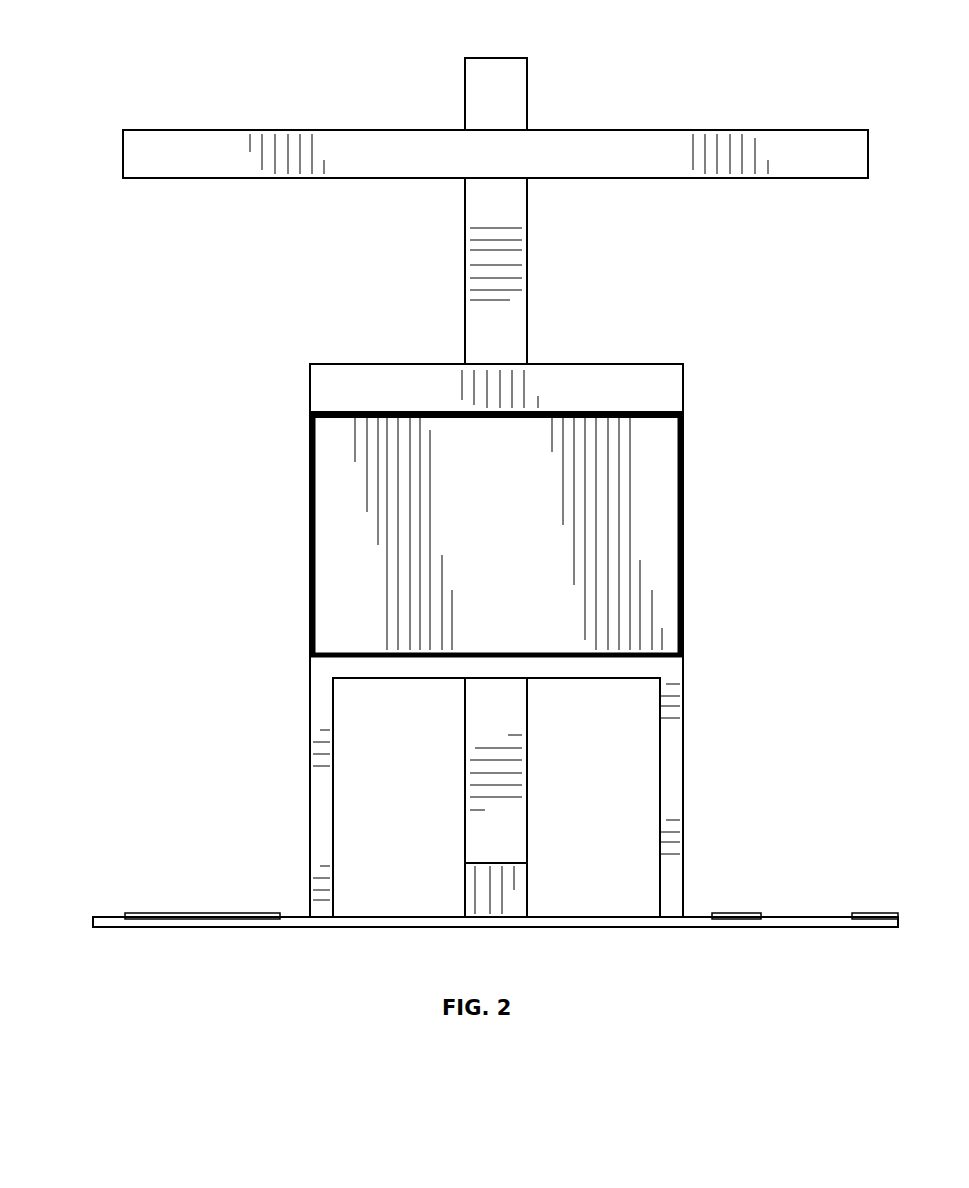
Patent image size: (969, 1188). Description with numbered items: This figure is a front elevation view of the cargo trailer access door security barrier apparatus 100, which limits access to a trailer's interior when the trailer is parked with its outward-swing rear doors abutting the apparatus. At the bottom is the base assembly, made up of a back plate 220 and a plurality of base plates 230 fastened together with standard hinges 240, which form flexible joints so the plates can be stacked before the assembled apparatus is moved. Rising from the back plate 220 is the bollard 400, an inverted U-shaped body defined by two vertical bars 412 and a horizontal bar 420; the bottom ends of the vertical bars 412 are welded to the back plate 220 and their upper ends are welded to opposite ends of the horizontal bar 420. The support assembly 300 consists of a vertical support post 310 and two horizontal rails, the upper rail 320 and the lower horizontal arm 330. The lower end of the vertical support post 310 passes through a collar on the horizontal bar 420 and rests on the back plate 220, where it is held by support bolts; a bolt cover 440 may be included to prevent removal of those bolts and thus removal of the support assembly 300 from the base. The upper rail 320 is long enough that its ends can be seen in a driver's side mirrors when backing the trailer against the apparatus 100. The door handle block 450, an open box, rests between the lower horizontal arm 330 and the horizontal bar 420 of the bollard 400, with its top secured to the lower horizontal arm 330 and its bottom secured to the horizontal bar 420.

The security barrier apparatus 100 is at (130, 56).
The back plate 220 is at (592, 920).
The base plates 230 is at (188, 920).
The hinges 240 is at (238, 915).
The support assembly 300 is at (536, 260).
The vertical support post 310 is at (475, 322).
The upper rail 320 is at (813, 146).
The lower horizontal arm 330 is at (672, 388).
The bollard 400 is at (303, 707).
The vertical bars 412 is at (318, 787).
The horizontal bar 420 is at (415, 677).
The bolt cover 440 is at (517, 898).
The door handle block 450 is at (690, 565).